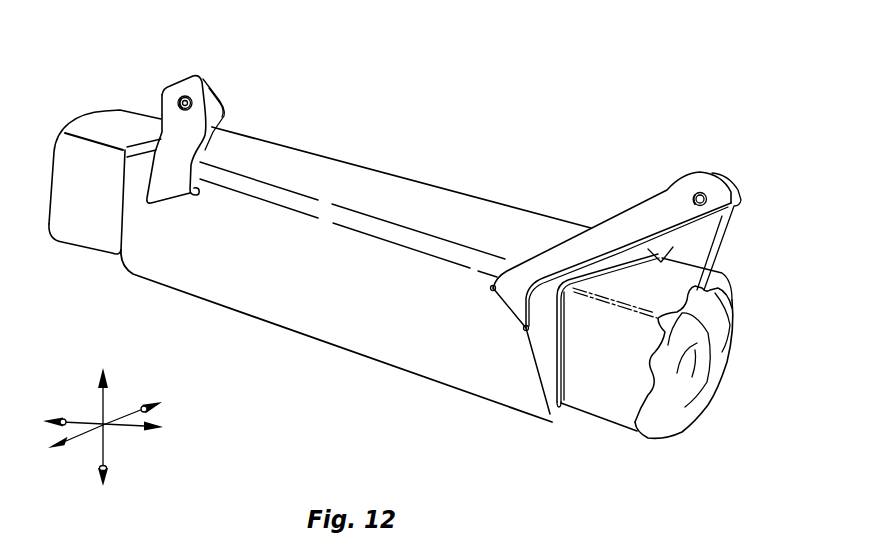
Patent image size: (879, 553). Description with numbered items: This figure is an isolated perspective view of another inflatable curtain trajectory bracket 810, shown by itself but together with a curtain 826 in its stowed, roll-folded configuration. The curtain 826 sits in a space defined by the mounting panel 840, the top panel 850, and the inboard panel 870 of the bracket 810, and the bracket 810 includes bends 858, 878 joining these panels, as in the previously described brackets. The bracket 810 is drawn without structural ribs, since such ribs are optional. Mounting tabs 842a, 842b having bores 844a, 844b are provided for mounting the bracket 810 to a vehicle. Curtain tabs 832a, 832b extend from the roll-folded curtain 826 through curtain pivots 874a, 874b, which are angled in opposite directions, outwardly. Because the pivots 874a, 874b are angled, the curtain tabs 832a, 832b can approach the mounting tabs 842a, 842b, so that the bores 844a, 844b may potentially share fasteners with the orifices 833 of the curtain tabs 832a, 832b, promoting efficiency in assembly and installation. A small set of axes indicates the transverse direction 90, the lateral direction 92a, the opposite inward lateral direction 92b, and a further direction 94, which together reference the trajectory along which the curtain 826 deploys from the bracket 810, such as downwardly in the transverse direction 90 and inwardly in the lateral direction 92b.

The inflatable curtain trajectory bracket 810 is at (510, 140).
The curtain 826 is at (682, 408).
The curtain tab 832a is at (677, 177).
The curtain tab 832b is at (200, 113).
The orifice 833 is at (186, 97).
The mounting panel 840 is at (654, 256).
The mounting tab 842a is at (713, 173).
The mounting tab 842b is at (212, 88).
The bore 844a is at (728, 207).
The bore 844b is at (179, 96).
The top panel 850 is at (402, 192).
The bend 858 is at (350, 219).
The inboard panel 870 is at (527, 402).
The curtain pivot 874a is at (553, 418).
The curtain pivot 874b is at (128, 190).
The bend 878 is at (443, 353).
The transverse direction 90 is at (108, 443).
The lateral direction 92a is at (127, 410).
The lateral direction 92b is at (81, 438).
The longitudinal axis 94 is at (88, 420).